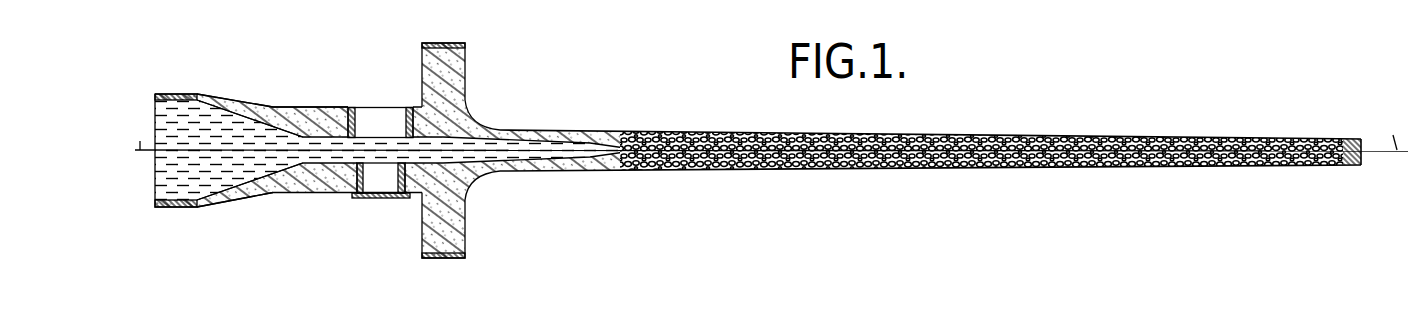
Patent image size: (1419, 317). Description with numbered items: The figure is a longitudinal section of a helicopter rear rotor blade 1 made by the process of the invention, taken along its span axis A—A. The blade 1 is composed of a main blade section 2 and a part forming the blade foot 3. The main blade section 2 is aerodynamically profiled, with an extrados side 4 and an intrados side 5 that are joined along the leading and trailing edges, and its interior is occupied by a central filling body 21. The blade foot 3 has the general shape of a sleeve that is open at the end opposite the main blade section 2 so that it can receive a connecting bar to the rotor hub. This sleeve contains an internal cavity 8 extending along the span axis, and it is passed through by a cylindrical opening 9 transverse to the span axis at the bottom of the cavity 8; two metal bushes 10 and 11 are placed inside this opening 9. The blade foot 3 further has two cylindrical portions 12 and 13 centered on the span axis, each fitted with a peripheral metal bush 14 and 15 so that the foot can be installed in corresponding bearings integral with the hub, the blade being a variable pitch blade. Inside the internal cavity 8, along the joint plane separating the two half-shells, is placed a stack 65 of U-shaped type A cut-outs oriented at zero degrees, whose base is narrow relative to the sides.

The helicopter rear rotor blade 1 is at (765, 130).
The main blade section 2 is at (930, 157).
The blade foot 3 is at (374, 130).
The extrados side 4 is at (1069, 135).
The intrados side 5 is at (1043, 167).
The internal cavity 8 is at (188, 168).
The cylindrical opening 9 is at (367, 87).
The metal bush 10 is at (350, 110).
The metal bush 11 is at (360, 198).
The cylindrical portion 12 is at (470, 130).
The cylindrical portion 13 is at (198, 99).
The peripheral metal bush 14 is at (444, 44).
The peripheral metal bush 15 is at (175, 96).
The central filling body 21 is at (771, 144).
The stack of cut-outs 65 is at (205, 178).